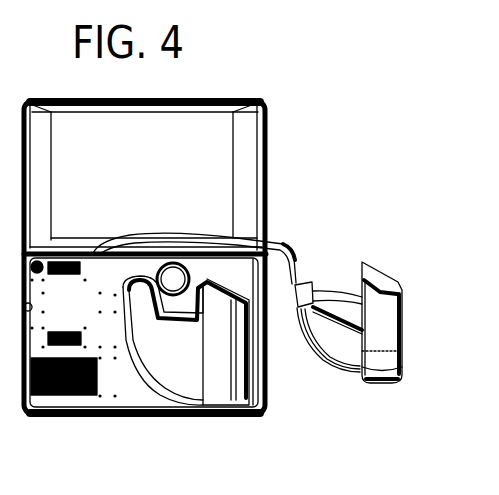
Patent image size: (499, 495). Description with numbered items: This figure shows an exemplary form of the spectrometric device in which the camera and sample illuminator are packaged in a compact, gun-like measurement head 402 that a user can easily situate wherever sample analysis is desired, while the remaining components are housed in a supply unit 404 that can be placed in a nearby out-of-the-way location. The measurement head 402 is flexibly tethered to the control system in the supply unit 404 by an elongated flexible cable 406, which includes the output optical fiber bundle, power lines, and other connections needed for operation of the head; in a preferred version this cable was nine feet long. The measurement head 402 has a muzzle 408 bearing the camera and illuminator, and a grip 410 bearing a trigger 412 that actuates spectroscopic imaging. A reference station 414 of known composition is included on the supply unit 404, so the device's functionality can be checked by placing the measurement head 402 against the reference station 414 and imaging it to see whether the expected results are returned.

The measurement head 402 is at (400, 313).
The supply unit 404 is at (140, 388).
The cable 406 is at (283, 250).
The muzzle 408 is at (399, 328).
The grip 410 is at (333, 293).
The trigger 412 is at (357, 333).
The reference station 414 is at (176, 272).